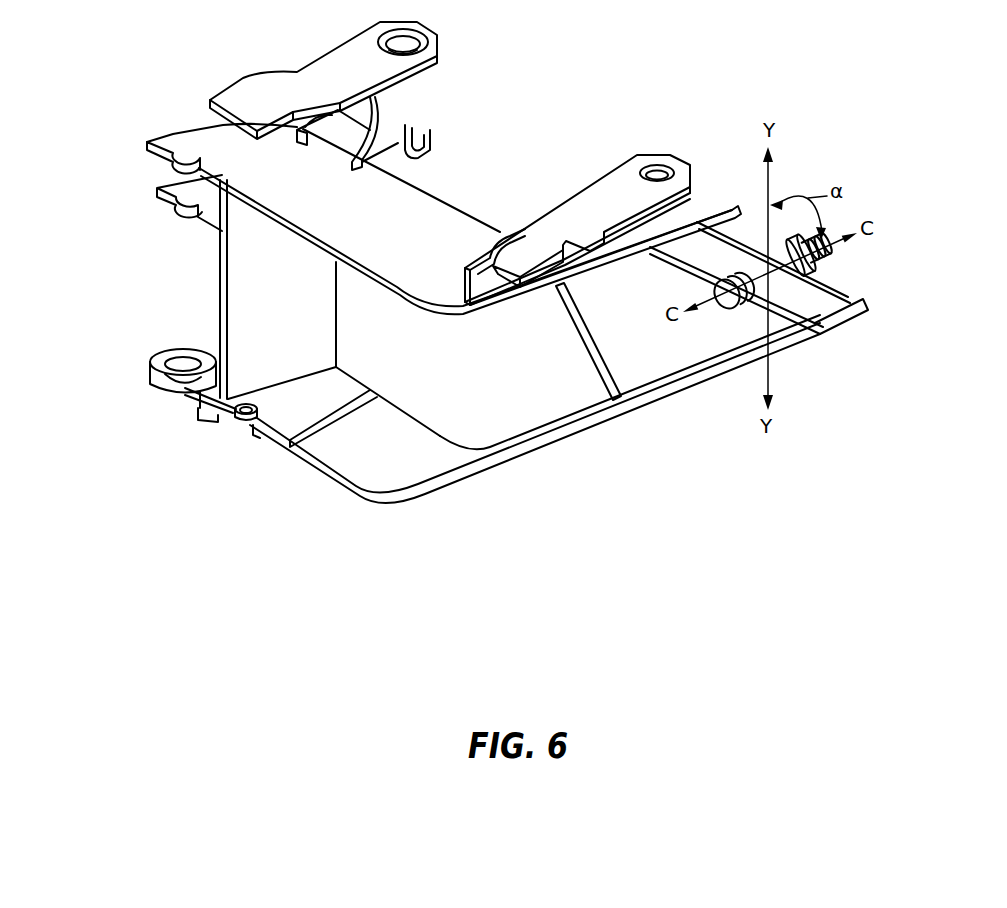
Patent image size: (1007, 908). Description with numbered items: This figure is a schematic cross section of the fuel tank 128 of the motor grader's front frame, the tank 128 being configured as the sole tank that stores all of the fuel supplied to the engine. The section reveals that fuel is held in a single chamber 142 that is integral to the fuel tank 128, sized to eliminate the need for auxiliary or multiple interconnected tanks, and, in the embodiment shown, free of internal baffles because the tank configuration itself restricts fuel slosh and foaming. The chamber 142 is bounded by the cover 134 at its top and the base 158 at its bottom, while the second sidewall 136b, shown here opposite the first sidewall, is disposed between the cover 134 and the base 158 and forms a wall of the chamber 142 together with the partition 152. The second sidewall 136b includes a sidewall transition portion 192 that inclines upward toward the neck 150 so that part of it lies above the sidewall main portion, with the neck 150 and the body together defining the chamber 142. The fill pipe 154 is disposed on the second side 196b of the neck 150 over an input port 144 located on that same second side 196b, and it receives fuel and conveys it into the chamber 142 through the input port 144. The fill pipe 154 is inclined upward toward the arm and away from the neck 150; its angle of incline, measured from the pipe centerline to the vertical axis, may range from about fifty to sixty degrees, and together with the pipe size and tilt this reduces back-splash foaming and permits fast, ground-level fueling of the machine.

The fuel tank 128 is at (120, 132).
The cover 134 is at (424, 220).
The second sidewall 136b is at (442, 385).
The chamber 142 is at (700, 348).
The input port 144 is at (727, 280).
The neck 150 is at (625, 327).
The partition 152 is at (807, 305).
The fill pipe 154 is at (807, 264).
The base 158 is at (384, 512).
The sidewall transition portion 192 is at (537, 375).
The second side 196b is at (667, 283).